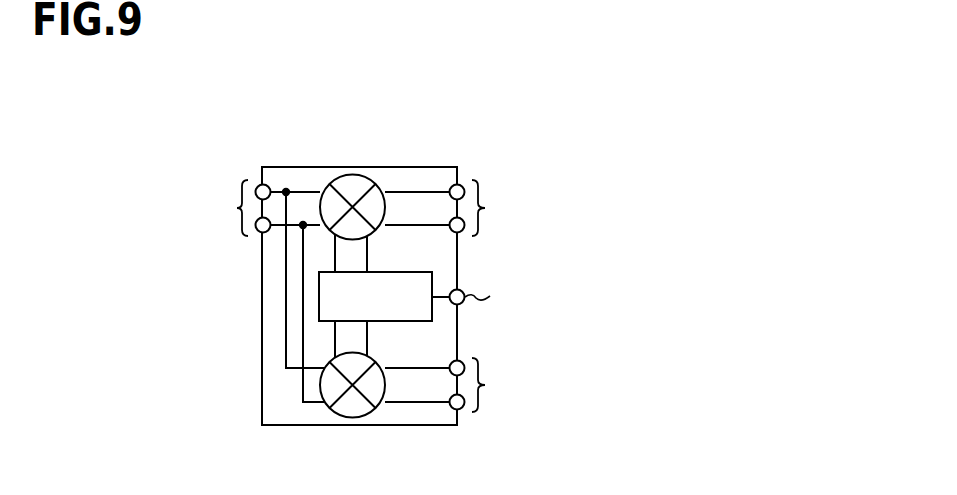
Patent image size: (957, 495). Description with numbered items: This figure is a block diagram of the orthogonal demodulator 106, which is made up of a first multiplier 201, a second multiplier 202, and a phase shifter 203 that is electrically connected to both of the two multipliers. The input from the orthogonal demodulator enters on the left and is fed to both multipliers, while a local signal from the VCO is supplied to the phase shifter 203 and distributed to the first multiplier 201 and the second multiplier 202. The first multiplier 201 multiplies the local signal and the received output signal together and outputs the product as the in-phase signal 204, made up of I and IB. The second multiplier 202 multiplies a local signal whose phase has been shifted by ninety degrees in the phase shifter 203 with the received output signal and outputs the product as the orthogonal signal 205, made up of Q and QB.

The orthogonal demodulator 106 is at (328, 167).
The first multiplier 201 is at (378, 191).
The second multiplier 202 is at (378, 369).
The phase shifter 203 is at (373, 272).
The in-phase signal (I and IB) 204 is at (626, 208).
The orthogonal signal (Q and QB) 205 is at (641, 387).